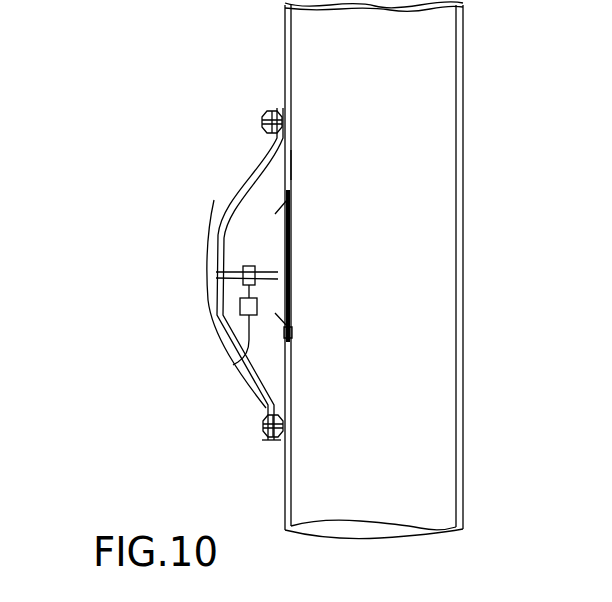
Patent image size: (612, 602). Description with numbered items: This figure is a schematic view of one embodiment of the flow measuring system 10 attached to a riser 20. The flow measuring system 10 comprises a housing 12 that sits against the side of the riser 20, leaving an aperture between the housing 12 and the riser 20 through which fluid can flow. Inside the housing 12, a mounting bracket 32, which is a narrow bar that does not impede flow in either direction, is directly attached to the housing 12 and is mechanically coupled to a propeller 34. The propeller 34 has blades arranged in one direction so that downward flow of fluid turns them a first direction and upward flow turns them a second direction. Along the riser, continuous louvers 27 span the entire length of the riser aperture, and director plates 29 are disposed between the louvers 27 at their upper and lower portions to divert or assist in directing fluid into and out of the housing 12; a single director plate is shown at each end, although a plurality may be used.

The flow measuring system 10 is at (136, 180).
The housing 12 is at (246, 164).
The riser 20 is at (285, 43).
The continuous louvers 27 is at (294, 163).
The director plates 29 is at (295, 205).
The mounting bracket 32 is at (233, 364).
The propeller 34 is at (212, 213).